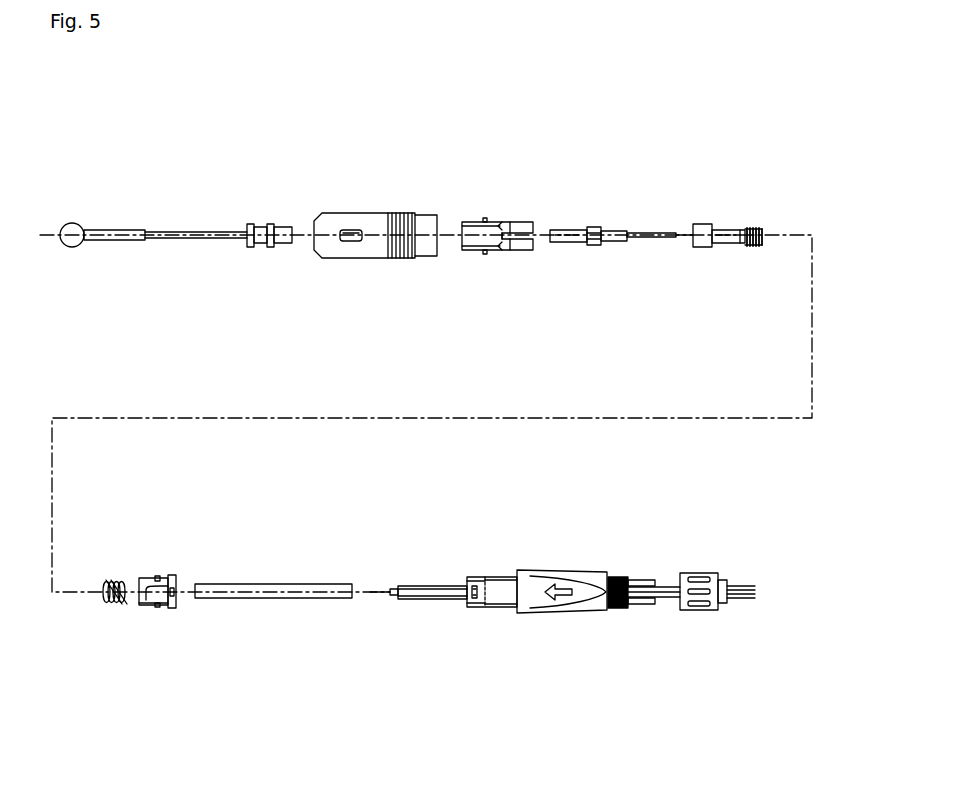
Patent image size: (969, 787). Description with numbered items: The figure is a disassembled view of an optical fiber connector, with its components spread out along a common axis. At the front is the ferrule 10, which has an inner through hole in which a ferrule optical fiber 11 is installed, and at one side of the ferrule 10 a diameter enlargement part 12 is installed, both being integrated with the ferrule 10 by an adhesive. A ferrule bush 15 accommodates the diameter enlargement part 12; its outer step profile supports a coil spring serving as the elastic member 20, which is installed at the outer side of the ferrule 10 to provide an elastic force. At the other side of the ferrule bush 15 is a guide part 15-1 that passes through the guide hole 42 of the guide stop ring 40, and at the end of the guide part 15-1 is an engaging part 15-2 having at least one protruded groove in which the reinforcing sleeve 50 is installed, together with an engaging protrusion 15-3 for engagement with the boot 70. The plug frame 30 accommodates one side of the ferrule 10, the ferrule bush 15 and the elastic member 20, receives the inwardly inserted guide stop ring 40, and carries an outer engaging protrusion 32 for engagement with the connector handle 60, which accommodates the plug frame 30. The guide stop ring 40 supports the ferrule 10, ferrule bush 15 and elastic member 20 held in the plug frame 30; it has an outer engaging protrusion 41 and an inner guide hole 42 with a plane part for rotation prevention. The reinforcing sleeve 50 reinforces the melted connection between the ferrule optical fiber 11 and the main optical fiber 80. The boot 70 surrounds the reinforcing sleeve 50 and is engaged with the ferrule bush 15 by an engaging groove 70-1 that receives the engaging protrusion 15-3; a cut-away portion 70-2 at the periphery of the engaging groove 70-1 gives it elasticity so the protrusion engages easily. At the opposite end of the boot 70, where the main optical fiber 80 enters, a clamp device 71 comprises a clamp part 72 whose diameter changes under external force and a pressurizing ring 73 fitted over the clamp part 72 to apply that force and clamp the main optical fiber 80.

The ferrule 10 is at (567, 228).
The ferrule optical fiber 11 is at (658, 220).
The diameter enlargement part 12 is at (600, 220).
The ferrule bush 15 is at (703, 220).
The guide part 15-1 is at (727, 220).
The engaging part 15-2 is at (752, 250).
The engaging protrusion 15-3 is at (745, 250).
The elastic member 20 is at (113, 606).
The plug frame 30 is at (515, 218).
The engaging protrusion 32 is at (485, 253).
The guide stop ring 40 is at (165, 610).
The engaging protrusion 41 is at (158, 578).
The guide hole 42 is at (173, 578).
The reinforcing sleeve 50 is at (272, 598).
The connector handle 60 is at (360, 220).
The boot 70 is at (515, 613).
The engaging groove 70-1 is at (473, 608).
The cut-away portion 70-2 is at (482, 578).
The clamp device 71 is at (648, 722).
The clamp part 72 is at (640, 608).
The pressurizing ring 73 is at (703, 610).
The main optical fiber 80 is at (395, 600).